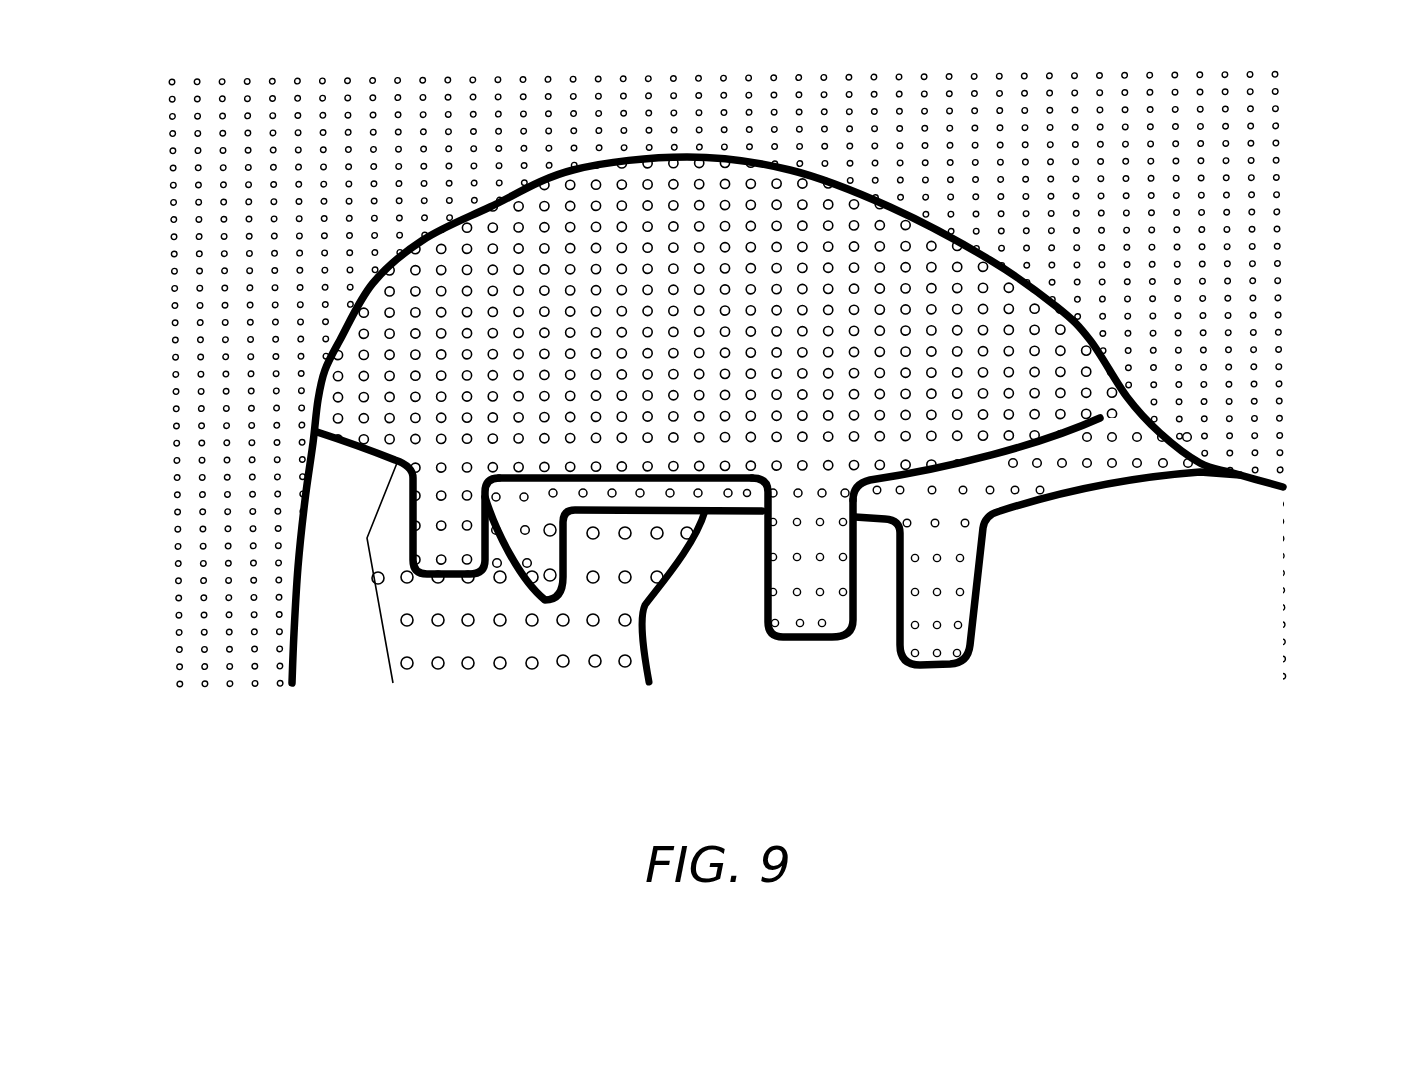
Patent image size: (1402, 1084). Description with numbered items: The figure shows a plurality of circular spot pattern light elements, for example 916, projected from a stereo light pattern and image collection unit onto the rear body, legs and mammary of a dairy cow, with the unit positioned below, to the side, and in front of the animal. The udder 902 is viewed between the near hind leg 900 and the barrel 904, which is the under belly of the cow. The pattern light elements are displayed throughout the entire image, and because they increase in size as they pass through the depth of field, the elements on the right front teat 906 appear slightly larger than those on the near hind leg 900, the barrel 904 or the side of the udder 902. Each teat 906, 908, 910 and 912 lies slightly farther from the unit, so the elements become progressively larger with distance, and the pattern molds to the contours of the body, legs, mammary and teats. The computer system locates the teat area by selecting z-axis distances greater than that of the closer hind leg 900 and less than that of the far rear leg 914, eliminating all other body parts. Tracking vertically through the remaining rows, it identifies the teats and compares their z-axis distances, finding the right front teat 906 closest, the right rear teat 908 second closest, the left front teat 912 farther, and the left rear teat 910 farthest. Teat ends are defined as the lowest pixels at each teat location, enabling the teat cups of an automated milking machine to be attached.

The near hind leg 900 is at (686, 378).
The udder 902 is at (859, 471).
The barrel 904 is at (838, 419).
The right front teat 906 is at (818, 582).
The right rear teat 908 is at (406, 557).
The left rear teat 910 is at (623, 556).
The left front teat 912 is at (1047, 588).
The far rear leg 914 is at (547, 609).
The circular spot pattern light element 916 is at (1081, 506).